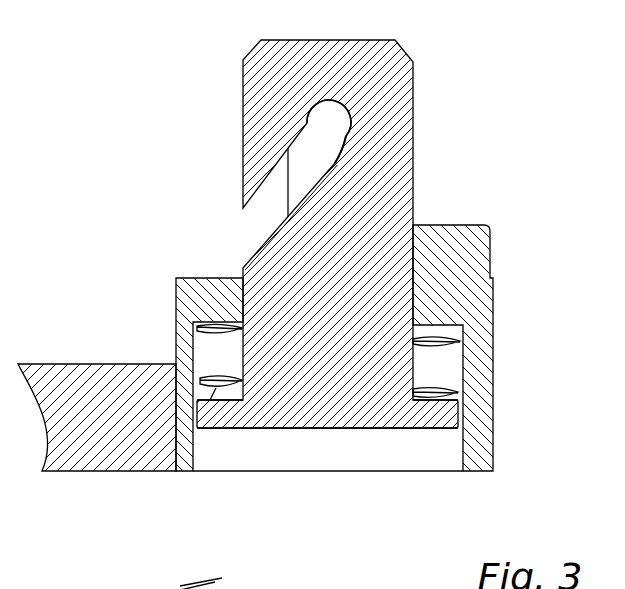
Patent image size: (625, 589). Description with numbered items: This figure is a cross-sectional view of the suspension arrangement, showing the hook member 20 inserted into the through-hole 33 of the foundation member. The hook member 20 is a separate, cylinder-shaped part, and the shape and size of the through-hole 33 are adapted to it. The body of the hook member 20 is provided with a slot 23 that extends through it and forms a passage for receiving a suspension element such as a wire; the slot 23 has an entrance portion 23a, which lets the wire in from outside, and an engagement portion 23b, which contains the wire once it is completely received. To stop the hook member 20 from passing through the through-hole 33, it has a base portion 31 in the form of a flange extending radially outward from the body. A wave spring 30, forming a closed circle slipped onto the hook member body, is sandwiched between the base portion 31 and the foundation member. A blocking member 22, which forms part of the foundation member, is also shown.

The hook member 20 is at (385, 80).
The blocking member 22 is at (300, 190).
The slot 23 is at (334, 153).
The entrance portion 23a is at (247, 225).
The engagement portion 23b is at (328, 102).
The wave spring 30 is at (457, 343).
The base portion 31 is at (220, 412).
The through-hole 33 is at (328, 450).